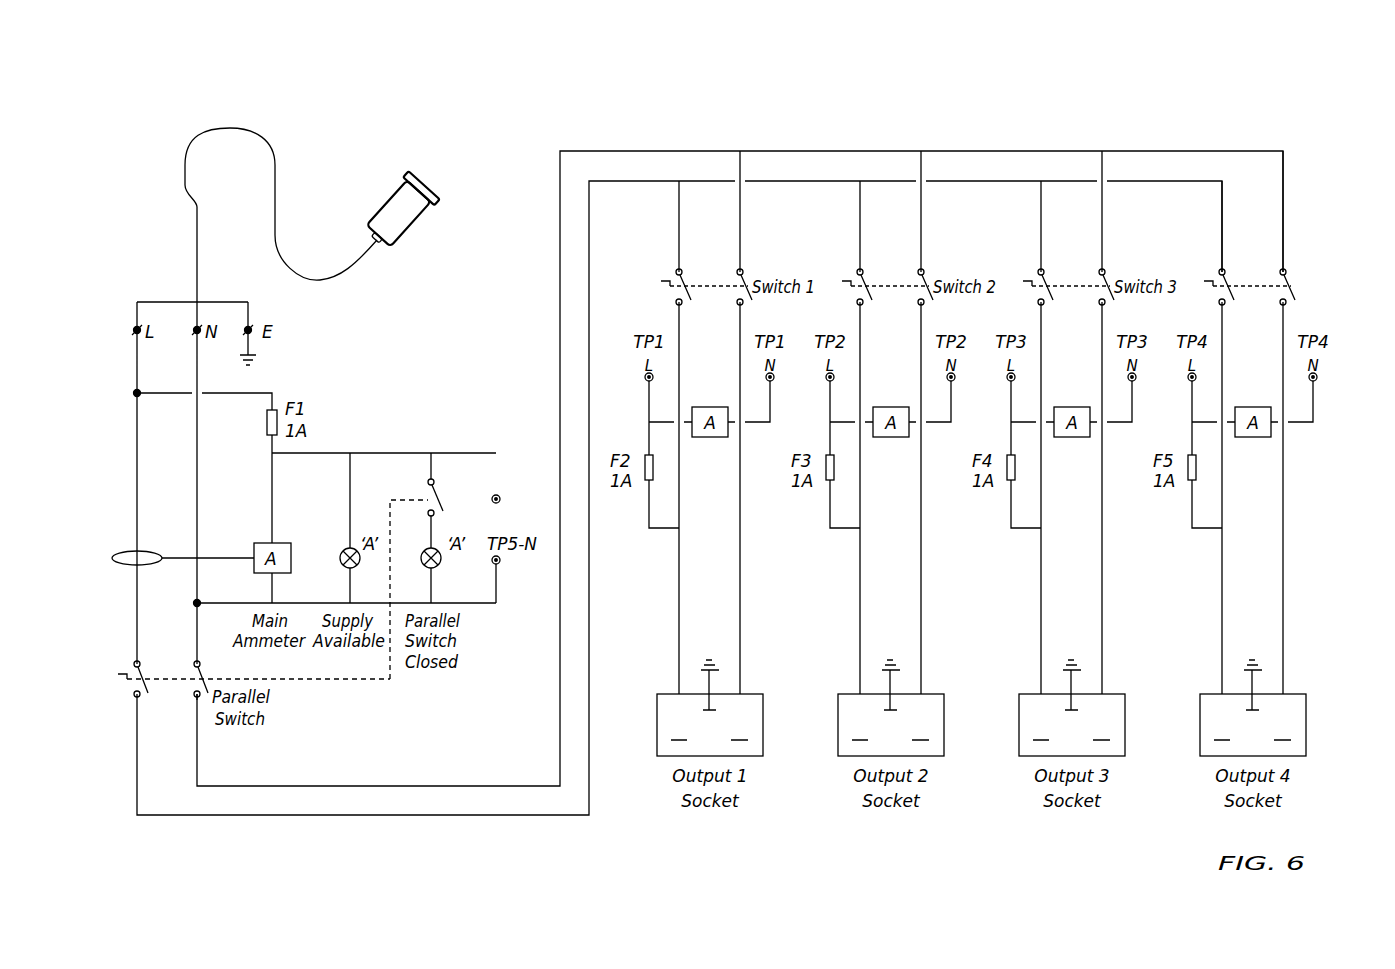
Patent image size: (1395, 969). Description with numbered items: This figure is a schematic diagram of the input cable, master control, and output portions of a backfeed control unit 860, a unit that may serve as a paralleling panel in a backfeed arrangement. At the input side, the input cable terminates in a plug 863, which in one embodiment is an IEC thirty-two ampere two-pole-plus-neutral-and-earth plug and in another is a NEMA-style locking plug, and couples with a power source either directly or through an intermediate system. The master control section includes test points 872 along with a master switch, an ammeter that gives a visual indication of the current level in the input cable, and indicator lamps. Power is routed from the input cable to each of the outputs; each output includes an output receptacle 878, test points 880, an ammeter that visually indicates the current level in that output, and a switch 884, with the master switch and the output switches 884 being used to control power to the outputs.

The backfeed control unit 860 is at (495, 114).
The plug 863 is at (388, 207).
The test points 872 is at (498, 494).
The output receptacle 878 is at (1306, 733).
The test points 880 is at (1318, 378).
The switch 884 is at (1286, 269).